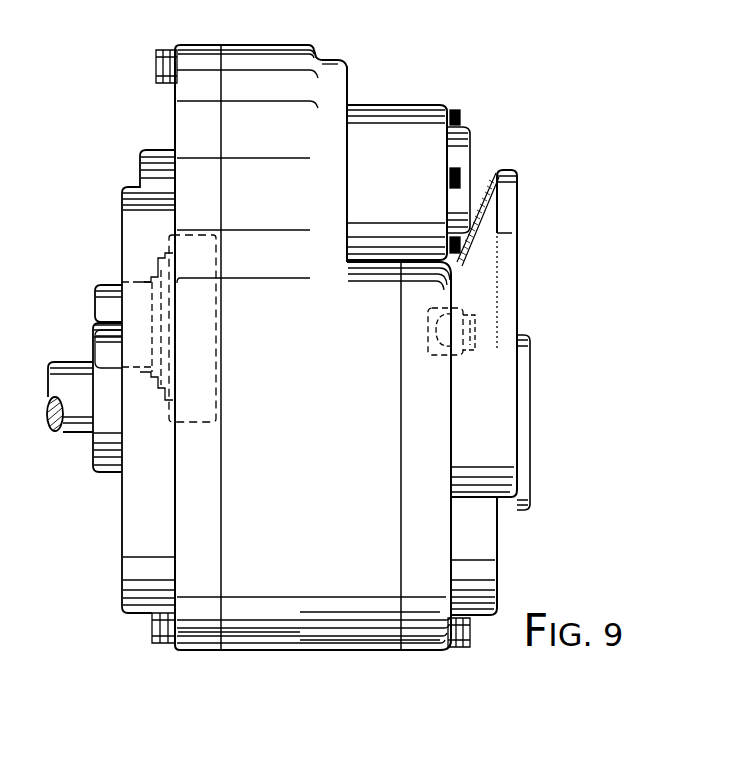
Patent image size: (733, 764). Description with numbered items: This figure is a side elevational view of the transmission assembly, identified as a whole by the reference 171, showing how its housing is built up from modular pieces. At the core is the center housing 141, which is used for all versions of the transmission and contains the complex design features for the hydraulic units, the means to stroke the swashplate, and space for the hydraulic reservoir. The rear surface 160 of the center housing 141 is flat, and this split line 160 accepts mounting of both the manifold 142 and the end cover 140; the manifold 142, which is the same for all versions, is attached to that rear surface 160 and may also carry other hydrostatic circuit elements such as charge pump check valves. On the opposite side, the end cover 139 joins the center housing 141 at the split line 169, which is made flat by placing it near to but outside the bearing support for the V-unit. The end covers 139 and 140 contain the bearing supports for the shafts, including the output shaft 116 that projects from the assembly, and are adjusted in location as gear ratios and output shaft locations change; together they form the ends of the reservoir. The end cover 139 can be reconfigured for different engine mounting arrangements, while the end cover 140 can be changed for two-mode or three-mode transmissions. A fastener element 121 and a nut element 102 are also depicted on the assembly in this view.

The drive assembly 171 is at (168, 40).
The manifold 142 is at (413, 108).
The fastener 121 is at (470, 316).
The shaft nut 102 is at (112, 292).
The output shaft 116 is at (52, 378).
The split line 169 is at (220, 528).
The rear surface 160 is at (398, 536).
The end cover 139 is at (197, 632).
The end cover 140 is at (421, 612).
The center housing 141 is at (345, 638).